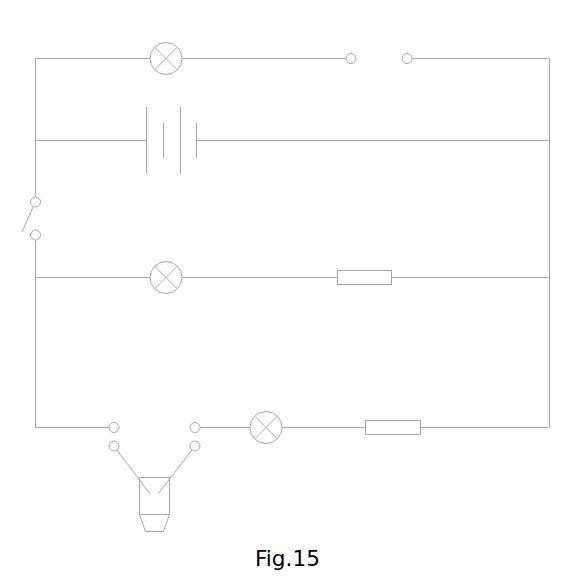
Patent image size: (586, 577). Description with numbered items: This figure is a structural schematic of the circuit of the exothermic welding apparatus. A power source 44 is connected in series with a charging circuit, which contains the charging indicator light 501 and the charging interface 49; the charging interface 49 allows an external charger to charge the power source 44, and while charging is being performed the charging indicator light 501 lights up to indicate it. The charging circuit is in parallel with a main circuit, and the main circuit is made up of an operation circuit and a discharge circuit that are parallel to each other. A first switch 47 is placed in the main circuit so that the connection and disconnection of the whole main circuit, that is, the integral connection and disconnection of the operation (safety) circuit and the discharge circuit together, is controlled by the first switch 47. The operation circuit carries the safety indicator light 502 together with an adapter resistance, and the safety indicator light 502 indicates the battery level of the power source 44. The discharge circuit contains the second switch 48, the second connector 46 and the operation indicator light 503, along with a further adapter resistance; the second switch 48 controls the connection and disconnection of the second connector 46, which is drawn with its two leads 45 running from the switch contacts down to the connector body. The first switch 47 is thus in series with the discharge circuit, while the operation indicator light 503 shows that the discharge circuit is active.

The charging indicator light 501 is at (177, 40).
The safety indicator light 502 is at (172, 254).
The operation indicator light 503 is at (266, 409).
The charging interface 49 is at (378, 50).
The power source 44 is at (200, 163).
The first switch 47 is at (45, 218).
The second switch 48 is at (167, 414).
The probe leads 45 is at (125, 468).
The second connector 46 is at (170, 497).